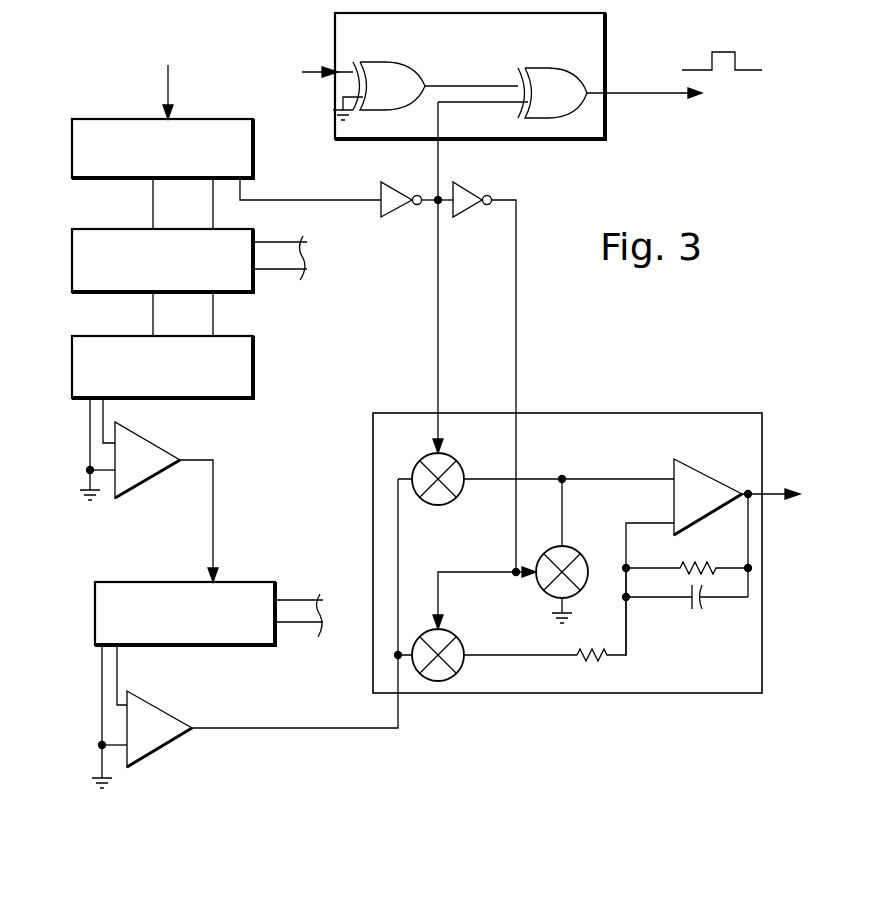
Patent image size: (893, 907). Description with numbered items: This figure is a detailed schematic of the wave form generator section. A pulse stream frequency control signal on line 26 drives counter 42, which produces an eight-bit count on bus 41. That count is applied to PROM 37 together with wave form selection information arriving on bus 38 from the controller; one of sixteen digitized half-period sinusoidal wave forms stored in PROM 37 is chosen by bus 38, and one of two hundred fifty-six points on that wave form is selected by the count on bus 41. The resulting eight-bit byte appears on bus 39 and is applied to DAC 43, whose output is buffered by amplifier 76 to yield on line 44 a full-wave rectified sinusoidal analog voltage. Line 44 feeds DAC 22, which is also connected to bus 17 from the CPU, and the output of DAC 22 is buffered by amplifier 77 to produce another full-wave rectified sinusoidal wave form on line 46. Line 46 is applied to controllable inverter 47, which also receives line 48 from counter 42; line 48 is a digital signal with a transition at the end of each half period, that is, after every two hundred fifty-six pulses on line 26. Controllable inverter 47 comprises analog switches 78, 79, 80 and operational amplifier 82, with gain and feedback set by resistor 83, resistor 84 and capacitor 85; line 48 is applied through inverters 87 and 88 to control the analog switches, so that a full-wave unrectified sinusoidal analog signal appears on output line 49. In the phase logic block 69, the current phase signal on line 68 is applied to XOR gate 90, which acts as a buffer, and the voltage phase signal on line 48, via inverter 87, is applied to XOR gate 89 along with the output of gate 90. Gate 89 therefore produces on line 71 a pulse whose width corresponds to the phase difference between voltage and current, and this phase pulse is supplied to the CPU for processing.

The bus 17 is at (305, 615).
The DAC 22 is at (240, 600).
The line 26 is at (170, 85).
The PROM 37 is at (140, 280).
The bus 38 is at (275, 260).
The bus 39 is at (200, 318).
The bus 41 is at (162, 193).
The counter 42 is at (235, 146).
The DAC 43 is at (225, 373).
The line 44 is at (213, 510).
The line 46 is at (270, 735).
The controllable inverter 47 is at (620, 449).
The line 48 is at (358, 195).
The line 49 is at (770, 497).
The line 68 is at (308, 70).
The phase logic block 69 is at (495, 49).
The line 71 is at (650, 93).
The amplifier 76 is at (152, 467).
The amplifier 77 is at (163, 722).
The analog switch 78 is at (452, 470).
The analog switch 79 is at (452, 655).
The analog switch 80 is at (568, 556).
The operational amplifier 82 is at (703, 482).
The resistor 83 is at (590, 660).
The resistor 84 is at (695, 563).
The capacitor 85 is at (697, 608).
The inverter 87 is at (392, 208).
The inverter 88 is at (470, 205).
The XOR gate 89 is at (575, 48).
The XOR gate 90 is at (385, 78).